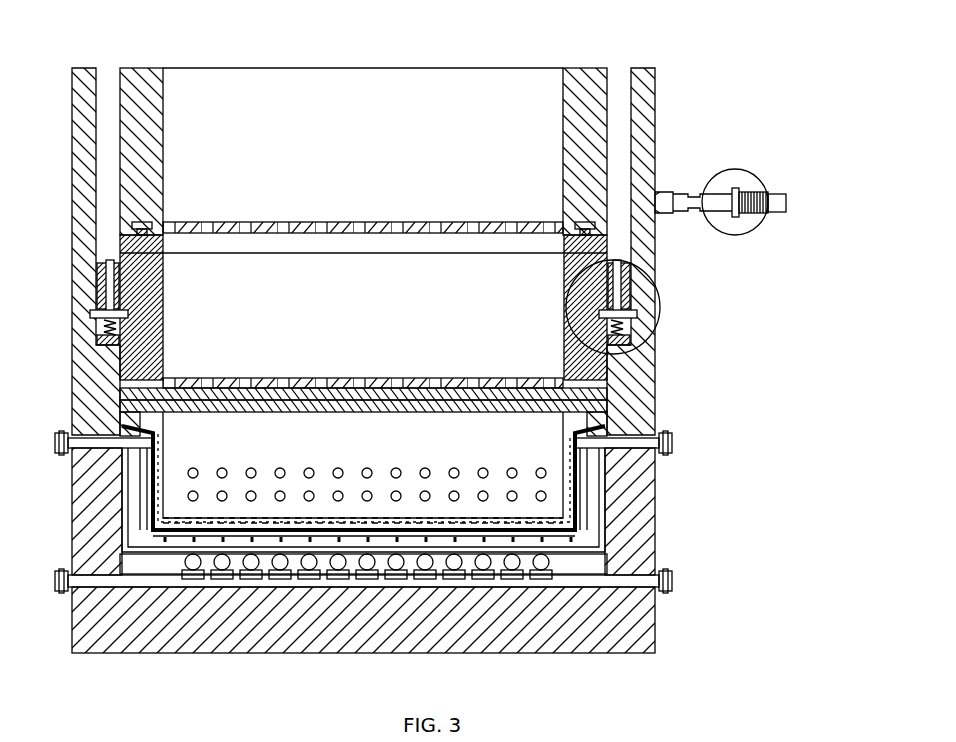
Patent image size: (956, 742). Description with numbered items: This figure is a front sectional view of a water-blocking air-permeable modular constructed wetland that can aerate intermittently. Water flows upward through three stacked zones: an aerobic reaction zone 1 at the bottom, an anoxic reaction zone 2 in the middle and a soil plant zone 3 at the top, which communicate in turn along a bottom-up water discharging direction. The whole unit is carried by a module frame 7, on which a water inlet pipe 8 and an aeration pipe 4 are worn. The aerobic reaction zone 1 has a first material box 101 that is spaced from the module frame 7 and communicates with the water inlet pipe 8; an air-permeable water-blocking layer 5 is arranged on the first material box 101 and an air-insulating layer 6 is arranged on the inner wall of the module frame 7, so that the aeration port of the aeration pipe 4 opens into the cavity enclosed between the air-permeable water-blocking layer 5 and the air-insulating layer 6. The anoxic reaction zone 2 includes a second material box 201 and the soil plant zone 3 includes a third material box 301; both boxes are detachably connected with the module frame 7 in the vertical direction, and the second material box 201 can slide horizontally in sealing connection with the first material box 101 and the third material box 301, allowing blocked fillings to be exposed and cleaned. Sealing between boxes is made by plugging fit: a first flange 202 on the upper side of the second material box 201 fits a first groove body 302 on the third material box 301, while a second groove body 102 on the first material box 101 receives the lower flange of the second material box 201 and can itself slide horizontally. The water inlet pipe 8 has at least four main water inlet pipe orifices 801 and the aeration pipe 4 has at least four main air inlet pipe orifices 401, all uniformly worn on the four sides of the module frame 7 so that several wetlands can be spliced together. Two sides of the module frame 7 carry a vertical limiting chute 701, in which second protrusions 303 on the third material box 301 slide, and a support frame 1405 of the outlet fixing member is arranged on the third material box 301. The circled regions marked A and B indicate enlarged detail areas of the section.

The aerobic reaction zone 1 is at (276, 388).
The first material box 101 is at (298, 402).
The second groove body 102 is at (152, 390).
The anoxic reaction zone 2 is at (330, 232).
The second material box 201 is at (394, 388).
The first flange 202 is at (165, 250).
The soil plant zone 3 is at (371, 121).
The third material box 301 is at (152, 84).
The first groove body 302 is at (146, 232).
The second protrusions 303 is at (622, 76).
The aeration pipe 4 is at (350, 545).
The main air inlet pipe orifices 401 is at (672, 440).
The air-permeable water-blocking layer 5 is at (168, 456).
The air-insulating layer 6 is at (95, 438).
The module frame 7 is at (647, 142).
The limiting chute 701 is at (640, 80).
The water inlet pipe 8 is at (195, 572).
The main water inlet pipe orifices 801 is at (672, 586).
The support frame 1405 is at (738, 204).
The detail region A is at (661, 298).
The detail region B is at (750, 170).